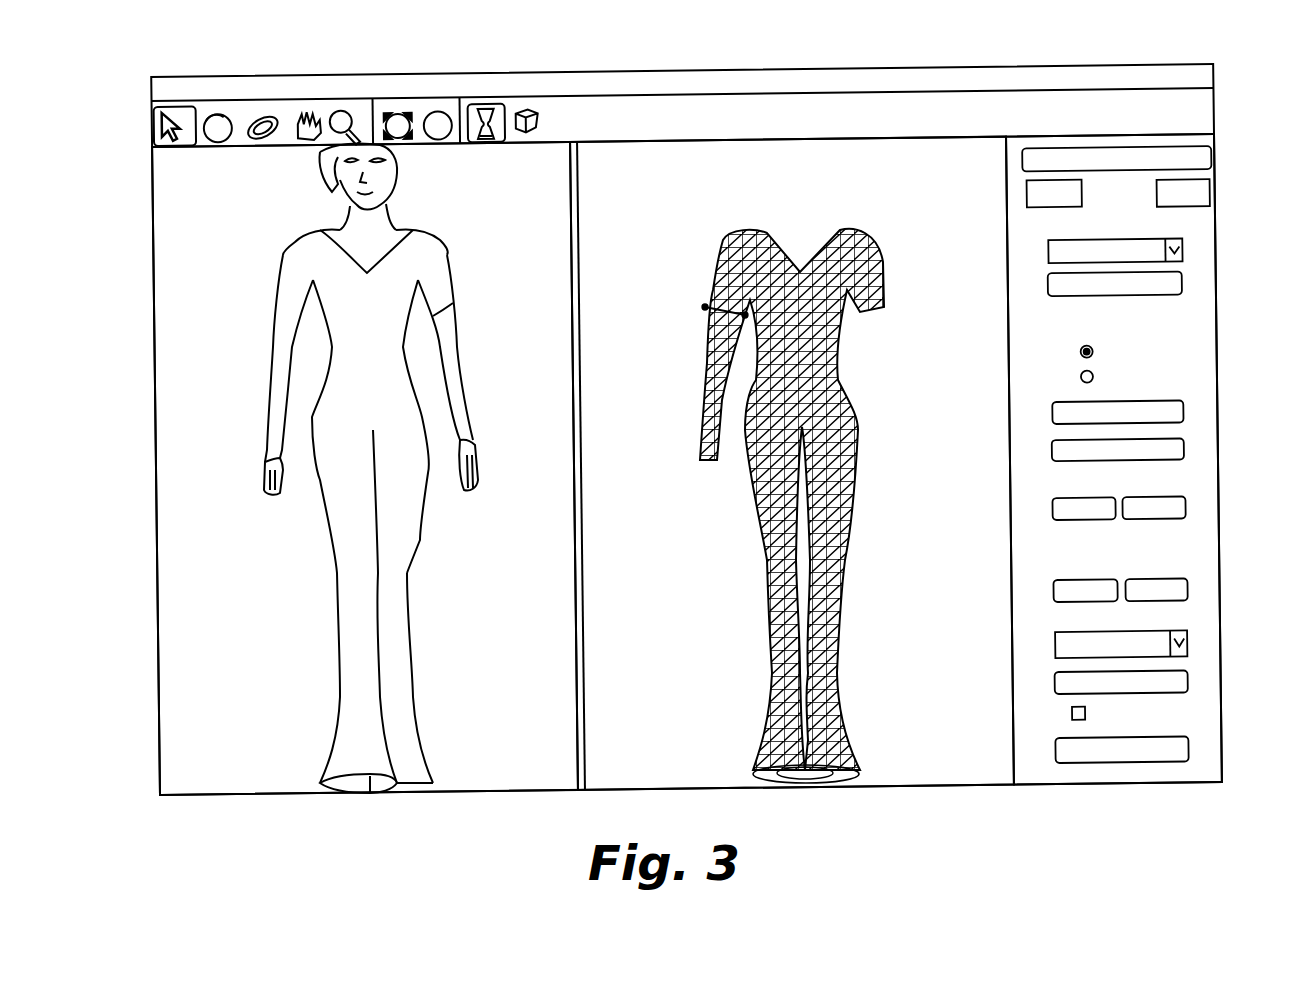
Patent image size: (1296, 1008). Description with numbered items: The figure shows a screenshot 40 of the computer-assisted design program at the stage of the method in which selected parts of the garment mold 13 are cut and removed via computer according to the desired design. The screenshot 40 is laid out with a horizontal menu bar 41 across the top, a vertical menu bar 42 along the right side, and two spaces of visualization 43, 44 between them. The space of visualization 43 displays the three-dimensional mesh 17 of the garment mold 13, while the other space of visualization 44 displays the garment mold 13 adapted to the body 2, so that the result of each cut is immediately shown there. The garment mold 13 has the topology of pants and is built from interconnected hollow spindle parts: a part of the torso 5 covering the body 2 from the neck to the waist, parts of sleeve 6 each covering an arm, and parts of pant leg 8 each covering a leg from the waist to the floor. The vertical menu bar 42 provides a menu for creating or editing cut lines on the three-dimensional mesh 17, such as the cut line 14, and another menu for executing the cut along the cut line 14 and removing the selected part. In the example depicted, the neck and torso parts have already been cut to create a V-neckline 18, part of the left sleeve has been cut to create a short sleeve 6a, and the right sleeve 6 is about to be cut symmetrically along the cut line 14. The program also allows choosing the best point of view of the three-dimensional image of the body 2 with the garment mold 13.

The body 2 is at (455, 365).
The part of the torso 5 is at (360, 325).
The part of sleeve 6 is at (278, 372).
The short sleeve 6a is at (437, 282).
The part of pant leg 8 is at (348, 638).
The garment mold 13 is at (376, 468).
The cut line 14 is at (713, 318).
The three-dimensional mesh 17 is at (803, 506).
The V-neckline 18 is at (350, 252).
The screenshot 40 is at (497, 795).
The horizontal menu bar 41 is at (150, 132).
The vertical menu bar 42 is at (1114, 491).
The space of visualization 43 is at (933, 758).
The space of visualization 44 is at (197, 677).